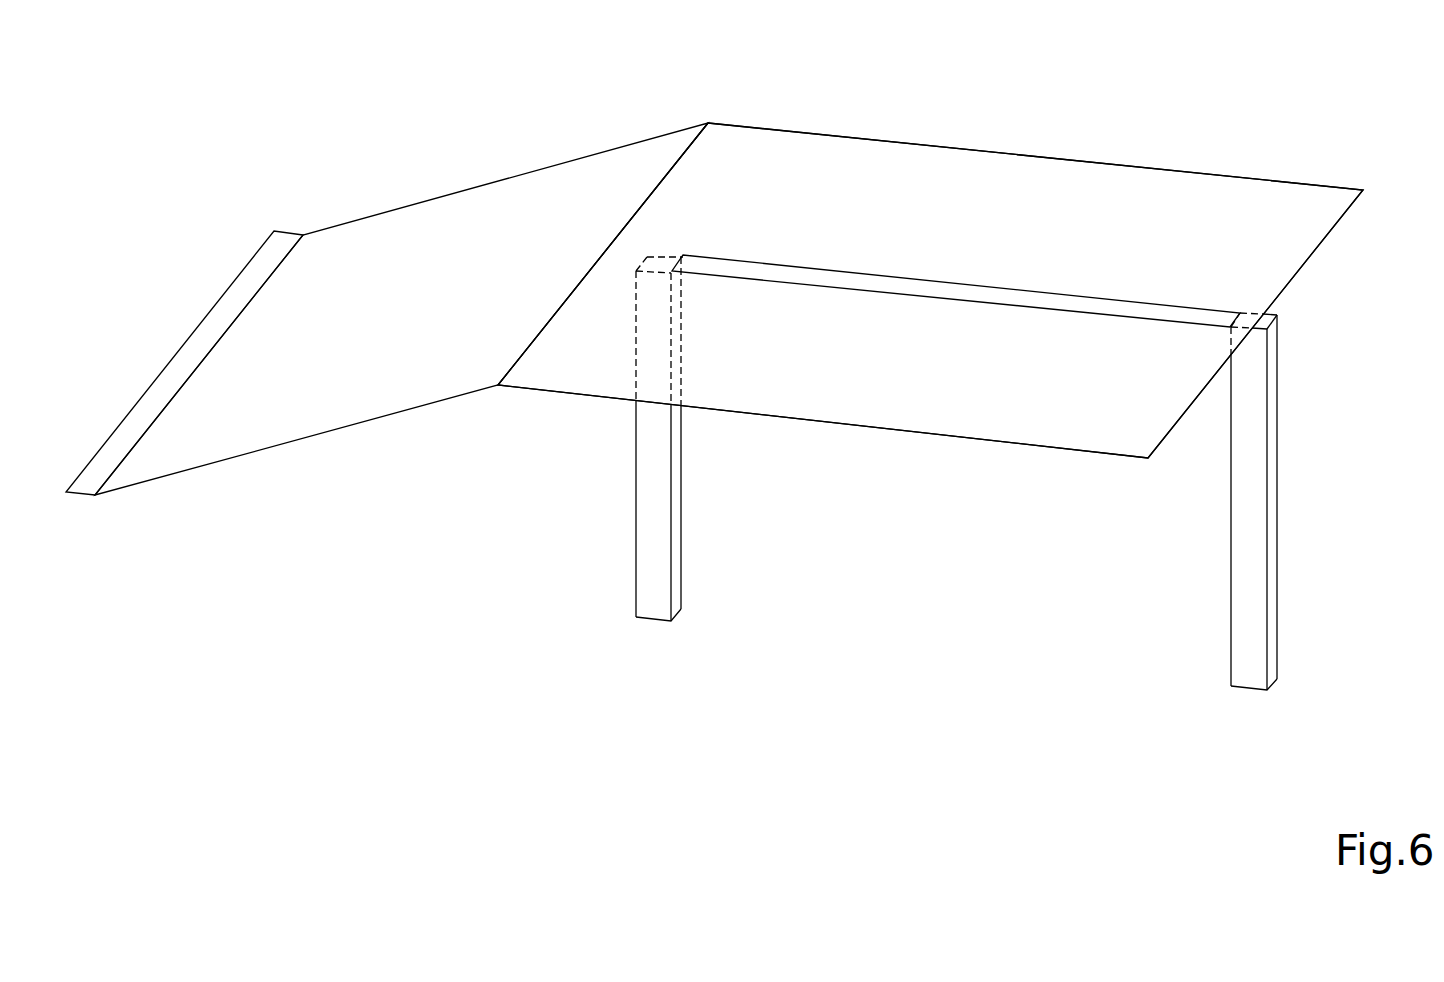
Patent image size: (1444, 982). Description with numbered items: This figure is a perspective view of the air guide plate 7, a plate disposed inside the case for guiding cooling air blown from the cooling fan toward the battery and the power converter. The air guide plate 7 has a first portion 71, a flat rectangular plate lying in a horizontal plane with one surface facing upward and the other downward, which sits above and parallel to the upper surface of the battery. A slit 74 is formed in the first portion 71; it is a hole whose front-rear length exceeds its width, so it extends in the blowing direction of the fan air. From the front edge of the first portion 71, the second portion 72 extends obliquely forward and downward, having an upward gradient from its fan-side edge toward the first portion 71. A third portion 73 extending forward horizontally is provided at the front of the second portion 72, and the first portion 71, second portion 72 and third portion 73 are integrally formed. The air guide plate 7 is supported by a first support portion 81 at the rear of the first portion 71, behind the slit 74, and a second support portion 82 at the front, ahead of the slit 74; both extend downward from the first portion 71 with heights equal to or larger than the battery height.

The air guide plate 7 is at (830, 90).
The first portion 71 is at (1032, 172).
The second portion 72 is at (513, 195).
The third portion 73 is at (282, 243).
The slit 74 is at (1163, 305).
The first support portion 81 is at (1245, 643).
The second support portion 82 is at (648, 573).